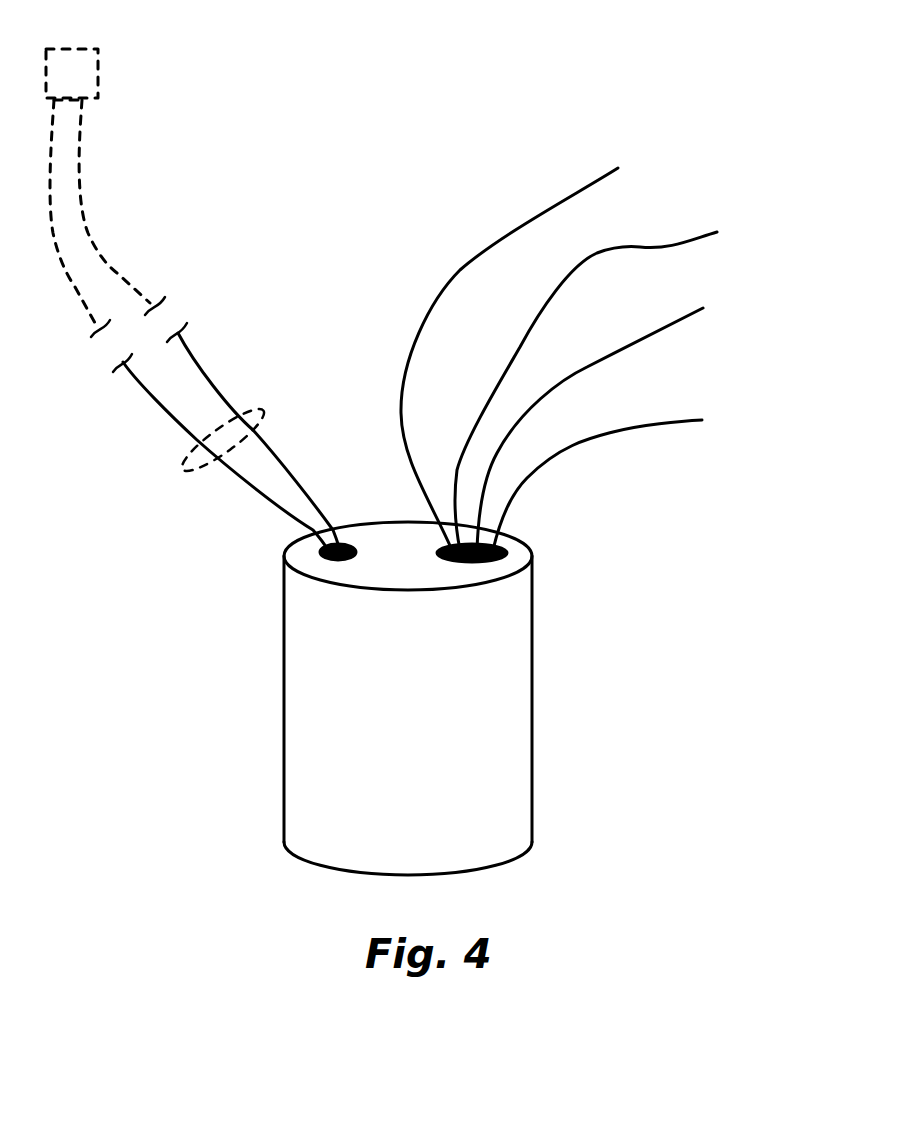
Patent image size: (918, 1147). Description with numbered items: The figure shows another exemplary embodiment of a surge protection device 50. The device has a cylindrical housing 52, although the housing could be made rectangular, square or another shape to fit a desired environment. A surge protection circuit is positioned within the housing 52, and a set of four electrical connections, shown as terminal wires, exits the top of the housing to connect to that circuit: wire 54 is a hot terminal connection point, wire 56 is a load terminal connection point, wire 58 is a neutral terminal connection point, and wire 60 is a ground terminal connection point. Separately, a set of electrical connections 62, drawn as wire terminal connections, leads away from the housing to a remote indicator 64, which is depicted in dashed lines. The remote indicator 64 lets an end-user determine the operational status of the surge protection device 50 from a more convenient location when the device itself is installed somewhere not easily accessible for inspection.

The surge protection device 50 is at (90, 507).
The housing 52 is at (283, 720).
The hot terminal connection wire 54 is at (443, 290).
The load terminal connection wire 56 is at (520, 347).
The neutral terminal connection wire 58 is at (585, 368).
The ground terminal connection wire 60 is at (655, 423).
The electrical connections for remote indicator 62 is at (263, 410).
The remote indicator 64 is at (98, 62).